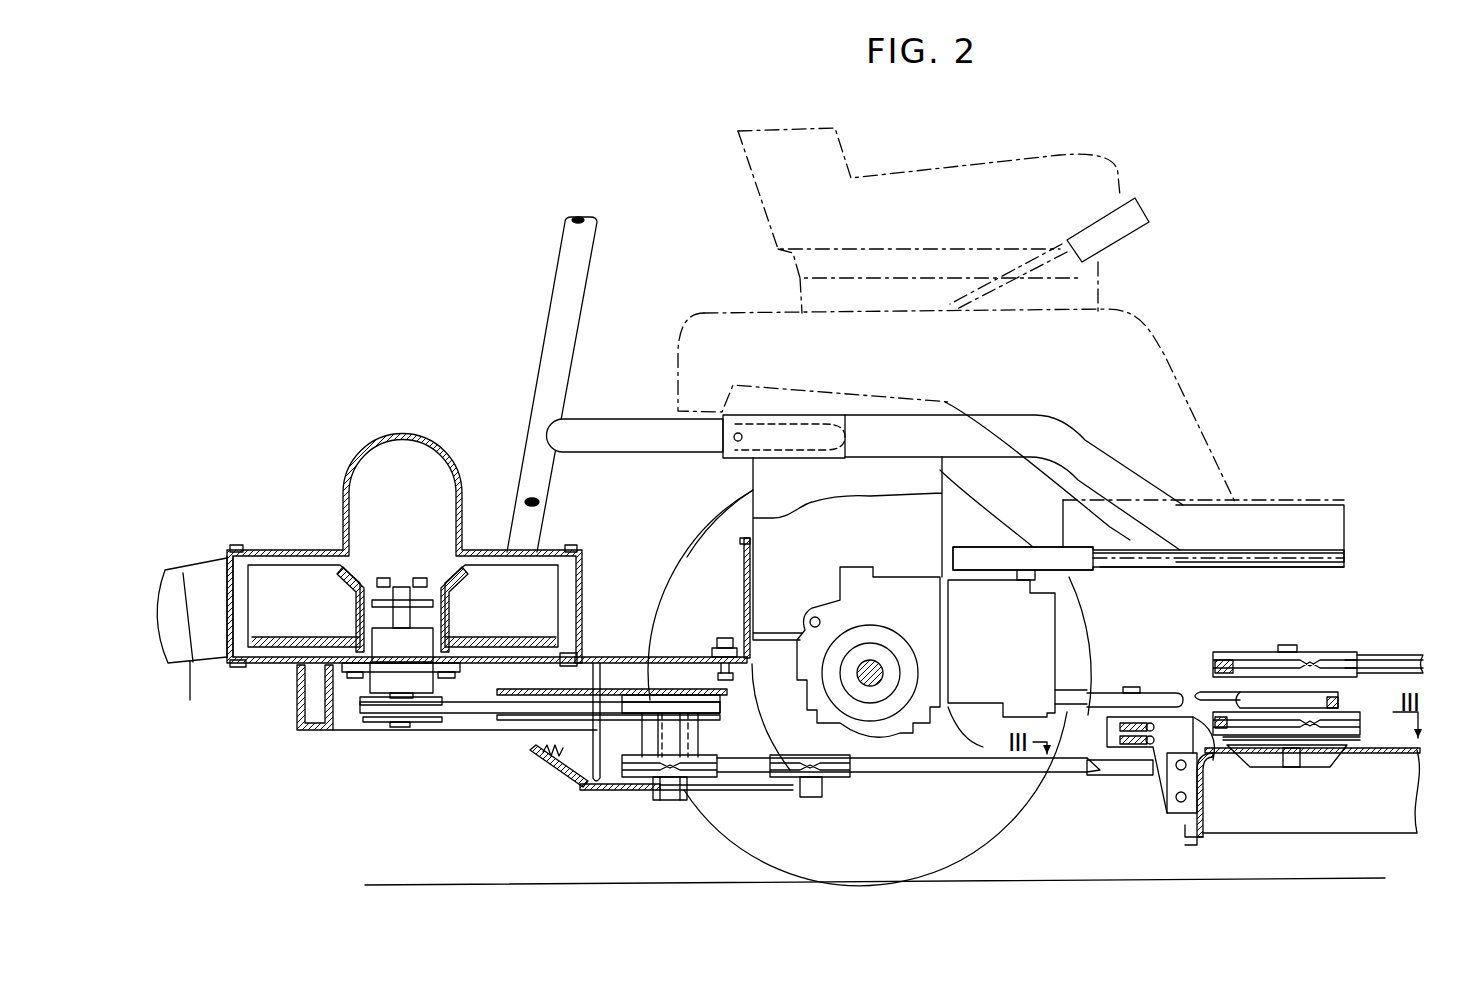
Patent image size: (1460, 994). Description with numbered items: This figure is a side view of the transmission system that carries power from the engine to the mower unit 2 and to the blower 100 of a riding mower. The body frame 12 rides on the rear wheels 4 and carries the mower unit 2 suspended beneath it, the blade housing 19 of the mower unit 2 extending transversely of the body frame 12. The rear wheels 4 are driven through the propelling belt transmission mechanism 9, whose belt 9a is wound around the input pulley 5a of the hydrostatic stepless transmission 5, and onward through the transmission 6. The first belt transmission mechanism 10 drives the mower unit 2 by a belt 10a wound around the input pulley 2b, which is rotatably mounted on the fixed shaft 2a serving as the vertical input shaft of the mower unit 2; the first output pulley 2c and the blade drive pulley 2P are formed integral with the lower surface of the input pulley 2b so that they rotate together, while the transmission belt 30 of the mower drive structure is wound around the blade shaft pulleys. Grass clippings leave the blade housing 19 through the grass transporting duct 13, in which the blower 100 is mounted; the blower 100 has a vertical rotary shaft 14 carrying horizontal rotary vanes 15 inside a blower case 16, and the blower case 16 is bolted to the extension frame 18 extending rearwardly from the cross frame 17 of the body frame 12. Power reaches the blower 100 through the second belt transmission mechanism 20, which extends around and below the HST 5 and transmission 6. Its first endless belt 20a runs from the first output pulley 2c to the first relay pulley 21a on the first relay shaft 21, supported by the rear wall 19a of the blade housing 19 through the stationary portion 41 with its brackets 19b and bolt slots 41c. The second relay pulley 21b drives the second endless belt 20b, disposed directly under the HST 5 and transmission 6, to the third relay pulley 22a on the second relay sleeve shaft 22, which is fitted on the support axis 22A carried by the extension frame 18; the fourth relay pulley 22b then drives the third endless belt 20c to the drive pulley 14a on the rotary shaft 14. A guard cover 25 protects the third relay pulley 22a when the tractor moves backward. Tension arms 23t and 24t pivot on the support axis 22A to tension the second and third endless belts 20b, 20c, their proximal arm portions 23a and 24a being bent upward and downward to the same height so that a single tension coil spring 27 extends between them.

The mower unit 2 is at (1299, 749).
The fixed shaft 2a is at (1285, 645).
The input pulley 2b is at (1318, 651).
The first output pulley 2c is at (1316, 709).
The blade drive pulley 2P is at (1355, 744).
The rear wheels 4 is at (685, 557).
The hydrostatic stepless transmission 5 is at (1047, 605).
The input pulley 5a is at (998, 546).
The transmission 6 is at (893, 578).
The propelling belt transmission mechanism 9 is at (1113, 546).
The belt 9a is at (1190, 569).
The first belt transmission mechanism 10 is at (1403, 654).
The belt 10a is at (1378, 656).
The body frame 12 is at (1305, 503).
The grass transporting duct 13 is at (208, 646).
The vertical rotary shaft 14 is at (400, 625).
The drive pulley 14a is at (390, 712).
The rotary vanes 15 is at (305, 568).
The blower case 16 is at (226, 582).
The cross frame 17 is at (744, 580).
The extension frame 18 is at (343, 732).
The blade housing 19 is at (1373, 747).
The rear wall 19a is at (1210, 777).
The brackets 19b is at (1188, 814).
The second belt transmission mechanism 20 is at (900, 805).
The first endless belt 20a is at (1213, 694).
The second endless belt 20b is at (985, 766).
The third endless belt 20c is at (467, 708).
The first relay shaft 21 is at (1130, 686).
The first relay pulley 21a is at (1098, 690).
The second relay pulley 21b is at (1085, 775).
The second relay sleeve shaft 22 is at (672, 740).
The third relay pulley 22a is at (716, 755).
The support axis 22A is at (670, 802).
The fourth relay pulley 22b is at (647, 690).
The proximal arm portion 23a is at (597, 792).
The tension arm 23t is at (815, 787).
The proximal arm portion 24a is at (718, 658).
The tension arm 24t is at (627, 690).
The guard cover 25 is at (560, 770).
The tension coil spring 27 is at (543, 740).
The transmission belt 30 is at (1214, 760).
The stationary portion 41 is at (1157, 777).
The slots 41c is at (1135, 750).
The blower 100 is at (275, 548).